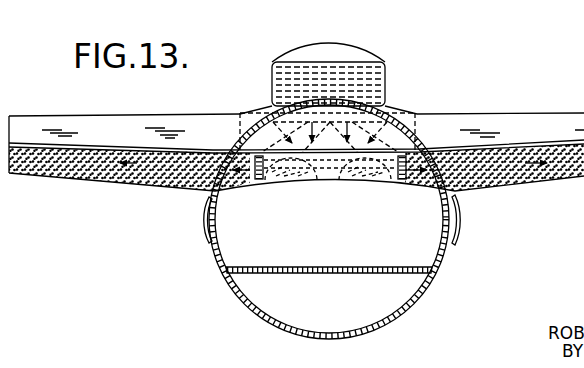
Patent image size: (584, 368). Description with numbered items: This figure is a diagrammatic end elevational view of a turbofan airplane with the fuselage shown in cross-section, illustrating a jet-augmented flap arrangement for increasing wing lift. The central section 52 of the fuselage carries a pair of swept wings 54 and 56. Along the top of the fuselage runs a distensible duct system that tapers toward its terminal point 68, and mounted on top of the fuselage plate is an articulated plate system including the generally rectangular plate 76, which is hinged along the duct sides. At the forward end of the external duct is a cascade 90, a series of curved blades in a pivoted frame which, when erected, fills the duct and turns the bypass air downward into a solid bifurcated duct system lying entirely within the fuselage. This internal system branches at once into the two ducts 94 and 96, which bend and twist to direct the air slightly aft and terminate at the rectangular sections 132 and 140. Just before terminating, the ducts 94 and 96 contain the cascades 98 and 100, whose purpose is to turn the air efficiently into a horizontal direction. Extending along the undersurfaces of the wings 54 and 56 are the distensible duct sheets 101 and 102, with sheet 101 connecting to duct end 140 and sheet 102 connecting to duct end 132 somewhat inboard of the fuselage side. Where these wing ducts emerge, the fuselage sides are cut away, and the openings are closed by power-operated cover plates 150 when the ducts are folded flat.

The central section of the fuselage 52 is at (397, 312).
The swept wing 54 is at (148, 117).
The swept wing 56 is at (535, 117).
The terminal point of the duct system 68 is at (335, 51).
The articulated plate 76 is at (272, 88).
The cascade 90 is at (365, 66).
The duct 94 is at (241, 136).
The duct 96 is at (418, 136).
The cascade 98 is at (298, 178).
The cascade 100 is at (328, 186).
The distensible duct sheet 101 is at (97, 166).
The distensible duct sheet 102 is at (545, 170).
The rectangular terminal section of duct 132 is at (393, 181).
The rectangular terminal section of duct 140 is at (260, 180).
The cover plate 150 is at (204, 217).